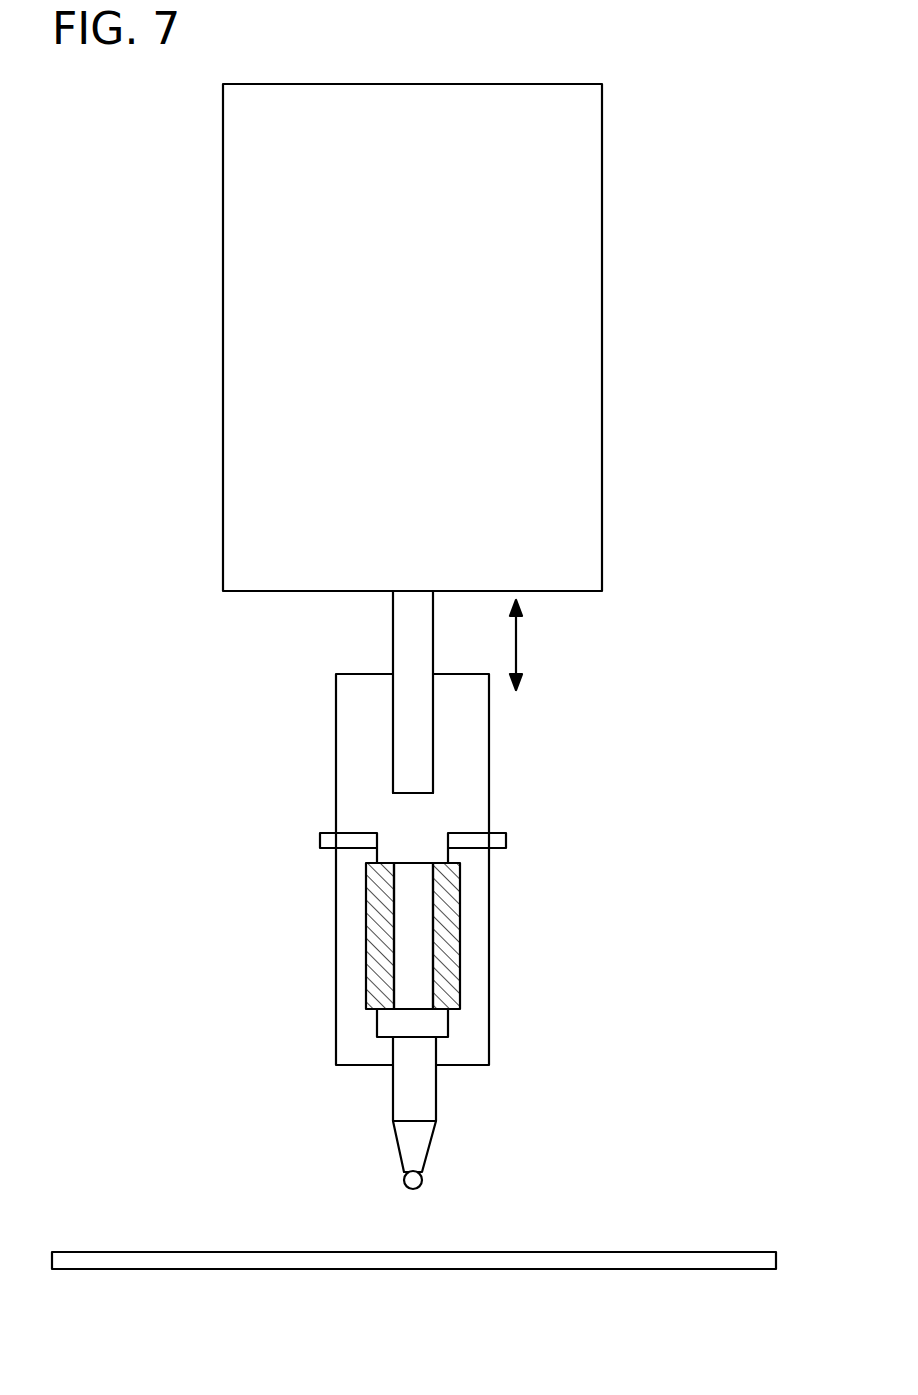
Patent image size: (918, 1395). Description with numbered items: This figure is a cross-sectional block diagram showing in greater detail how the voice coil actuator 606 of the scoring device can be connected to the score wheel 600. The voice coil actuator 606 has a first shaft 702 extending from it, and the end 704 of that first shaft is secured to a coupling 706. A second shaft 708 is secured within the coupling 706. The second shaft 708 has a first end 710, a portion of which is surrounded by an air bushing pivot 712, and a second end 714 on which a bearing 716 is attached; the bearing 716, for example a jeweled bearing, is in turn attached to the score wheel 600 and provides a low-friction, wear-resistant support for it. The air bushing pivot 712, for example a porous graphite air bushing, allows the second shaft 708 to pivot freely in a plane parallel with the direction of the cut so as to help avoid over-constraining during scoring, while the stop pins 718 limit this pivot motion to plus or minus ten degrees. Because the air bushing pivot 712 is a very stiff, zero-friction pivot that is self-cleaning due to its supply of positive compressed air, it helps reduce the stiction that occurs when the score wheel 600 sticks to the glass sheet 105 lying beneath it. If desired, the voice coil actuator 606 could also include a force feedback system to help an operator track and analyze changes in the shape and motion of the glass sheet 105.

The voice coil actuator 606 is at (602, 247).
The first shaft 702 is at (393, 610).
The coupling 706 is at (336, 685).
The end 704 is at (412, 794).
The stop pins 718 is at (320, 838).
The first end 710 is at (405, 885).
The air bushing pivot 712 is at (462, 953).
The second shaft 708 is at (422, 1083).
The second end 714 is at (393, 1123).
The bearing 716 is at (405, 1172).
The score wheel 600 is at (413, 1190).
The glass sheet 105 is at (702, 1269).